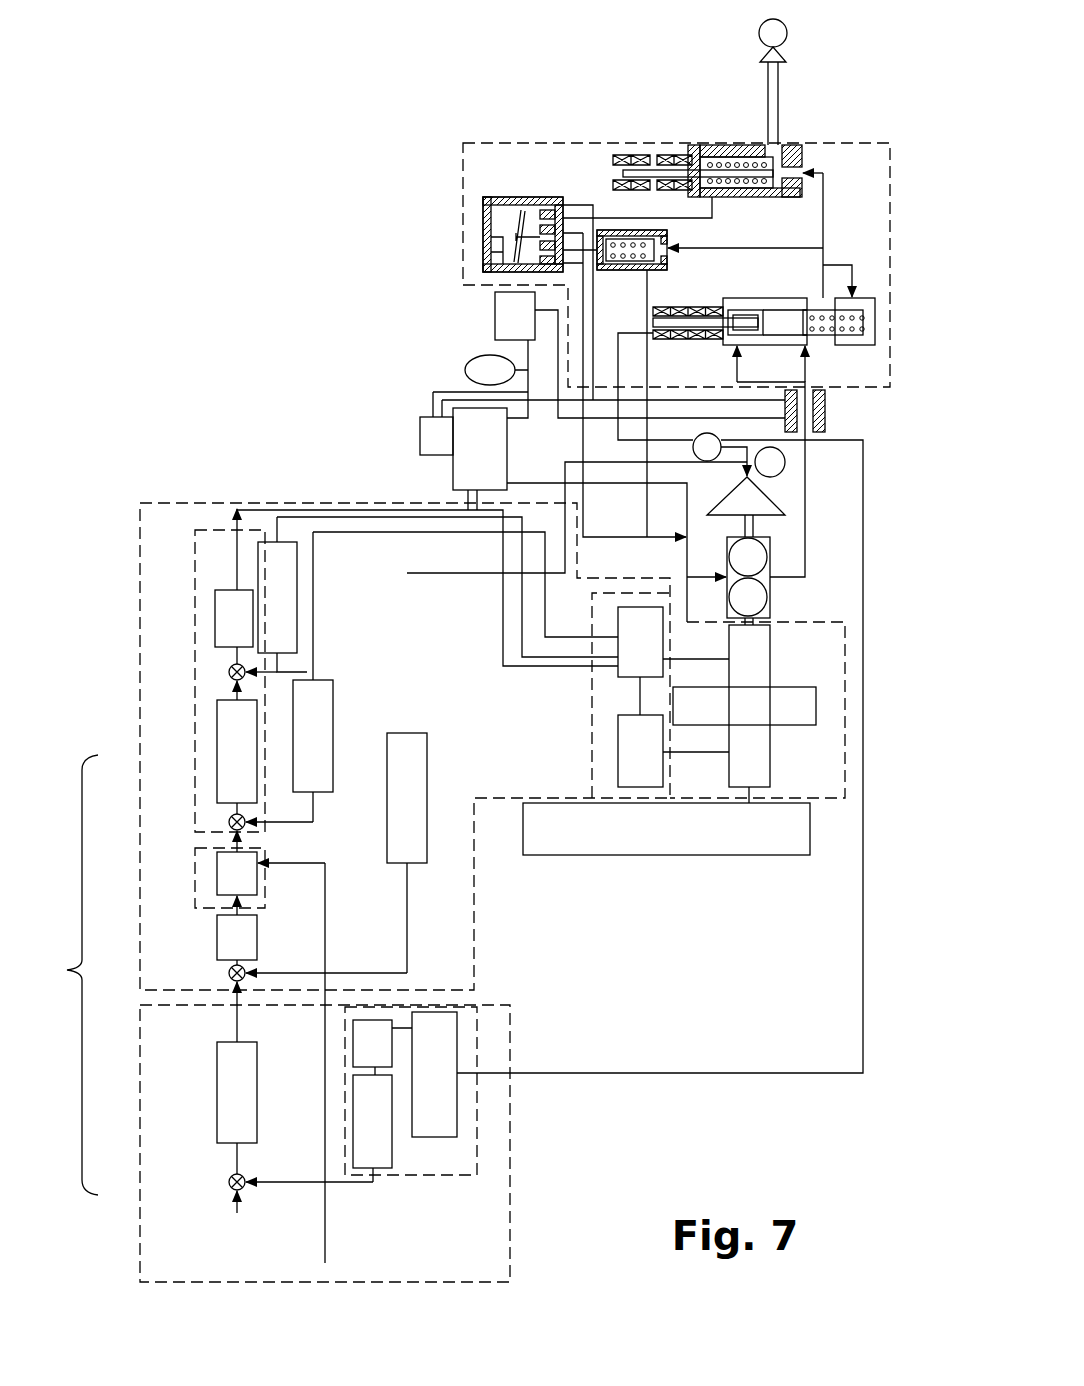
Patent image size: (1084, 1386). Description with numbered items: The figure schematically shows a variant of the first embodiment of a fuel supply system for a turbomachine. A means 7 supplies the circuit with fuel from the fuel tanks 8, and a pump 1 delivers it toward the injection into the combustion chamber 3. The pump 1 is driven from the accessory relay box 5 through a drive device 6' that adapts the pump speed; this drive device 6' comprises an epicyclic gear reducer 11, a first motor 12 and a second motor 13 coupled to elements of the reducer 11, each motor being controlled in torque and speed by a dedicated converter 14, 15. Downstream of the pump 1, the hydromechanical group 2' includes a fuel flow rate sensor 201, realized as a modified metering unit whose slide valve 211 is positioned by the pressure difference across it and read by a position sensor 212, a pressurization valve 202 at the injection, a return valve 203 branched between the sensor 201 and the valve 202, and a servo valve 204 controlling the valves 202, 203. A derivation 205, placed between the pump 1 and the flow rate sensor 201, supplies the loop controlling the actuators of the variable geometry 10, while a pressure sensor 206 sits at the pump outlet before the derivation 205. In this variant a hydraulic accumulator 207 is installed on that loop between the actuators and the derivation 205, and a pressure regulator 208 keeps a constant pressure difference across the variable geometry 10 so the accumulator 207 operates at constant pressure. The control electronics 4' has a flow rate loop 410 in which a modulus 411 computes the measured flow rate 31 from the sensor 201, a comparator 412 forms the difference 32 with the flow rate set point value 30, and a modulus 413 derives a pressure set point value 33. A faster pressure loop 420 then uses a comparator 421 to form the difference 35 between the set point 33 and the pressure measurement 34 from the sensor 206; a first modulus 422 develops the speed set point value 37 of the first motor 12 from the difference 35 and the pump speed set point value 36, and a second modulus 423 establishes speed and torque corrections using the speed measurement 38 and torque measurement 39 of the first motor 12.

The pump 1 is at (770, 556).
The combustion chamber 3 is at (766, 42).
The accessory relay box 5 is at (805, 818).
The means for supplying the circuit 7 is at (778, 505).
The fuel tanks 8 is at (700, 456).
The variable geometry 10 is at (445, 440).
The epicyclic gear reducer 11 is at (790, 705).
The first motor 12 is at (770, 660).
The second motor 13 is at (770, 752).
The converter 14 is at (634, 668).
The converter 15 is at (642, 785).
The flow rate set point value 30 is at (223, 1236).
The measured flow rate 31 is at (277, 1172).
The flow rate difference 32 is at (232, 1150).
The pressure set point value 33 is at (237, 1018).
The pressure measurement 34 is at (282, 965).
The pressure difference 35 is at (228, 937).
The speed set point value of the pump 36 is at (327, 902).
The speed set point value of the first motor 37 is at (228, 845).
The speed measurement 38 is at (352, 823).
The torque measurement 39 is at (268, 604).
The fuel flow rate sensor 201 is at (863, 330).
The pressurization valve 202 is at (803, 160).
The return valve 203 is at (603, 230).
The servo valve 204 is at (483, 237).
The derivation 205 is at (825, 408).
The pressure sensor 206 is at (785, 462).
The hydraulic accumulator 207 is at (478, 370).
The pressure regulator 208 is at (508, 317).
The slide valve 211 is at (773, 322).
The sensor of the slide valve position 212 is at (700, 307).
The flow rate loop 410 is at (140, 1118).
The modulus 411 is at (423, 1170).
The comparator 412 is at (227, 1178).
The modulus 413 is at (237, 1090).
The pressure loop 420 is at (140, 778).
The comparator 421 is at (227, 973).
The first modulus 422 is at (247, 860).
The second modulus 423 is at (195, 620).
The hydromechanical group 2' is at (620, 265).
The control electronics 4' is at (70, 975).
The drive device 6' is at (803, 710).